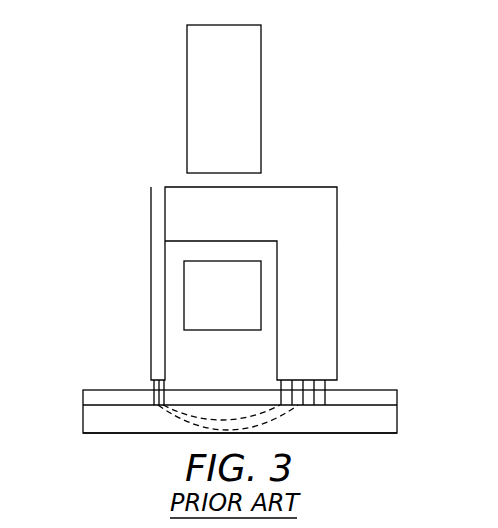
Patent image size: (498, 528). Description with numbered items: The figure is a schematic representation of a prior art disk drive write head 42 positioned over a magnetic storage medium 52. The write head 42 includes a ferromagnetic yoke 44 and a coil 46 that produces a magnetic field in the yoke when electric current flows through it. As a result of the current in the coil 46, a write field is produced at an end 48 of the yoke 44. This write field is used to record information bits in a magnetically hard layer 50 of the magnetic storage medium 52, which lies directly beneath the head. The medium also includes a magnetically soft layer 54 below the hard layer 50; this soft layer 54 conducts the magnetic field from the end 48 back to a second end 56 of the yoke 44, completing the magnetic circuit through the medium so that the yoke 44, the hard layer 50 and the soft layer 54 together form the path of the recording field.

The write head 42 is at (354, 136).
The ferromagnetic yoke 44 is at (328, 232).
The coil 46 is at (254, 100).
The end of the yoke 48 is at (158, 378).
The magnetically hard layer 50 is at (394, 396).
The magnetic storage medium 52 is at (76, 390).
The magnetically soft layer 54 is at (389, 421).
The second end of the yoke 56 is at (310, 377).